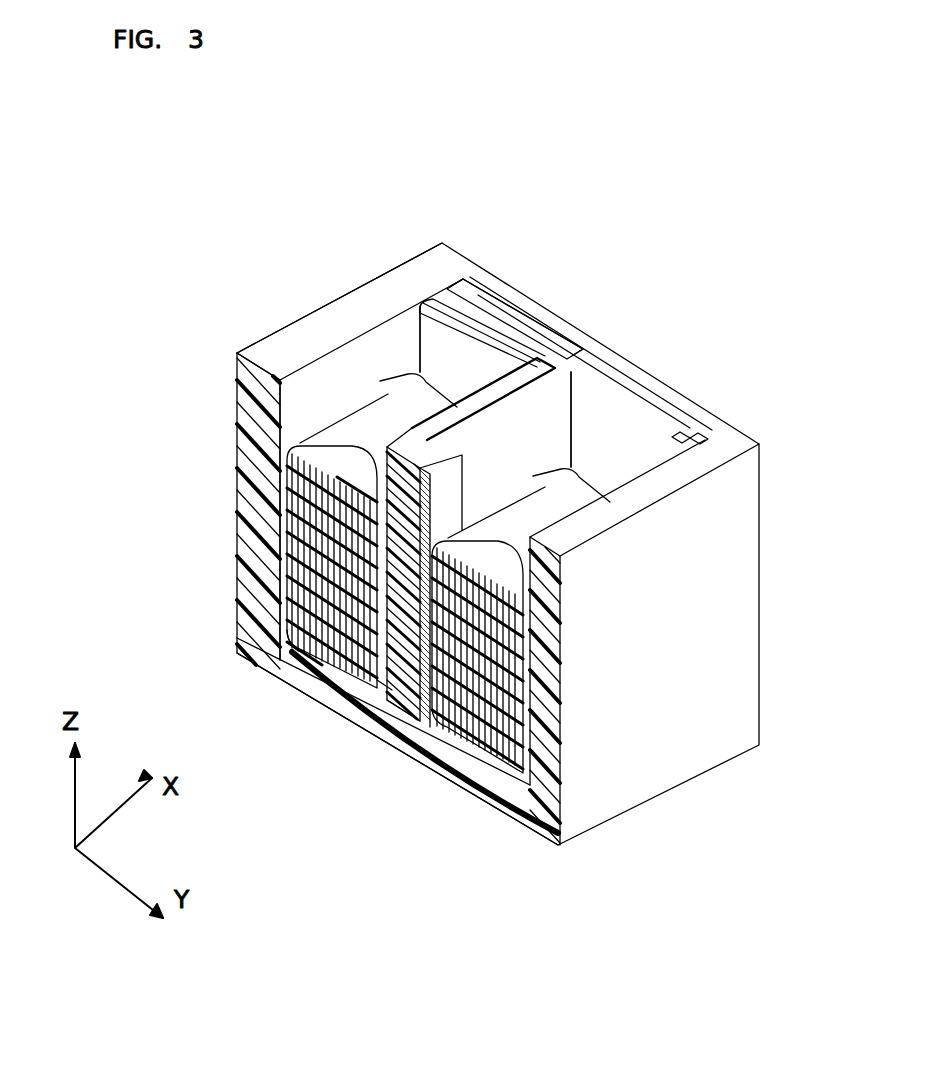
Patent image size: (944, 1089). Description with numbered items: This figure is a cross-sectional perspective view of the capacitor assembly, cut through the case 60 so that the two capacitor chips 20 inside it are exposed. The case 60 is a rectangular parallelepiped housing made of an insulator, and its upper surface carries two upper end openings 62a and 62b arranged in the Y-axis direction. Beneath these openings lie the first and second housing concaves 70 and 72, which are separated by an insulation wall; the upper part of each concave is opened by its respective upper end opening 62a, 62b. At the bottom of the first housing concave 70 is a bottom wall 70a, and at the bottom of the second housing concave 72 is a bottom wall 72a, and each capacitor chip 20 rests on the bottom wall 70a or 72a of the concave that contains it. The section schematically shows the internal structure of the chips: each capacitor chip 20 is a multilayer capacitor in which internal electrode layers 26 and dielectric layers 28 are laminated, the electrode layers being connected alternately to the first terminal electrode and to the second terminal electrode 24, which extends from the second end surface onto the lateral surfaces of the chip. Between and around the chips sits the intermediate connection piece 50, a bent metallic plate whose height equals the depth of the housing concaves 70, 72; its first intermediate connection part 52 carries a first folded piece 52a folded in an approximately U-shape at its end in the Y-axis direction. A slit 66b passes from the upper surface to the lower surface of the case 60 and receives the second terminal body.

The capacitor chip 20 is at (391, 396).
The second terminal electrode 24 is at (446, 385).
The internal electrode layer 26 is at (310, 667).
The dielectric layer 28 is at (345, 465).
The intermediate connection piece 50 is at (450, 492).
The first intermediate connection part 52 is at (433, 337).
The first folded piece 52a is at (495, 375).
The case 60 is at (727, 415).
The upper end opening 62a is at (245, 370).
The upper end opening 62b is at (575, 512).
The slit 66b is at (513, 317).
The first housing concave 70 is at (302, 388).
The bottom wall 70a is at (327, 697).
The second housing concave 72 is at (541, 480).
The bottom wall 72a is at (467, 770).